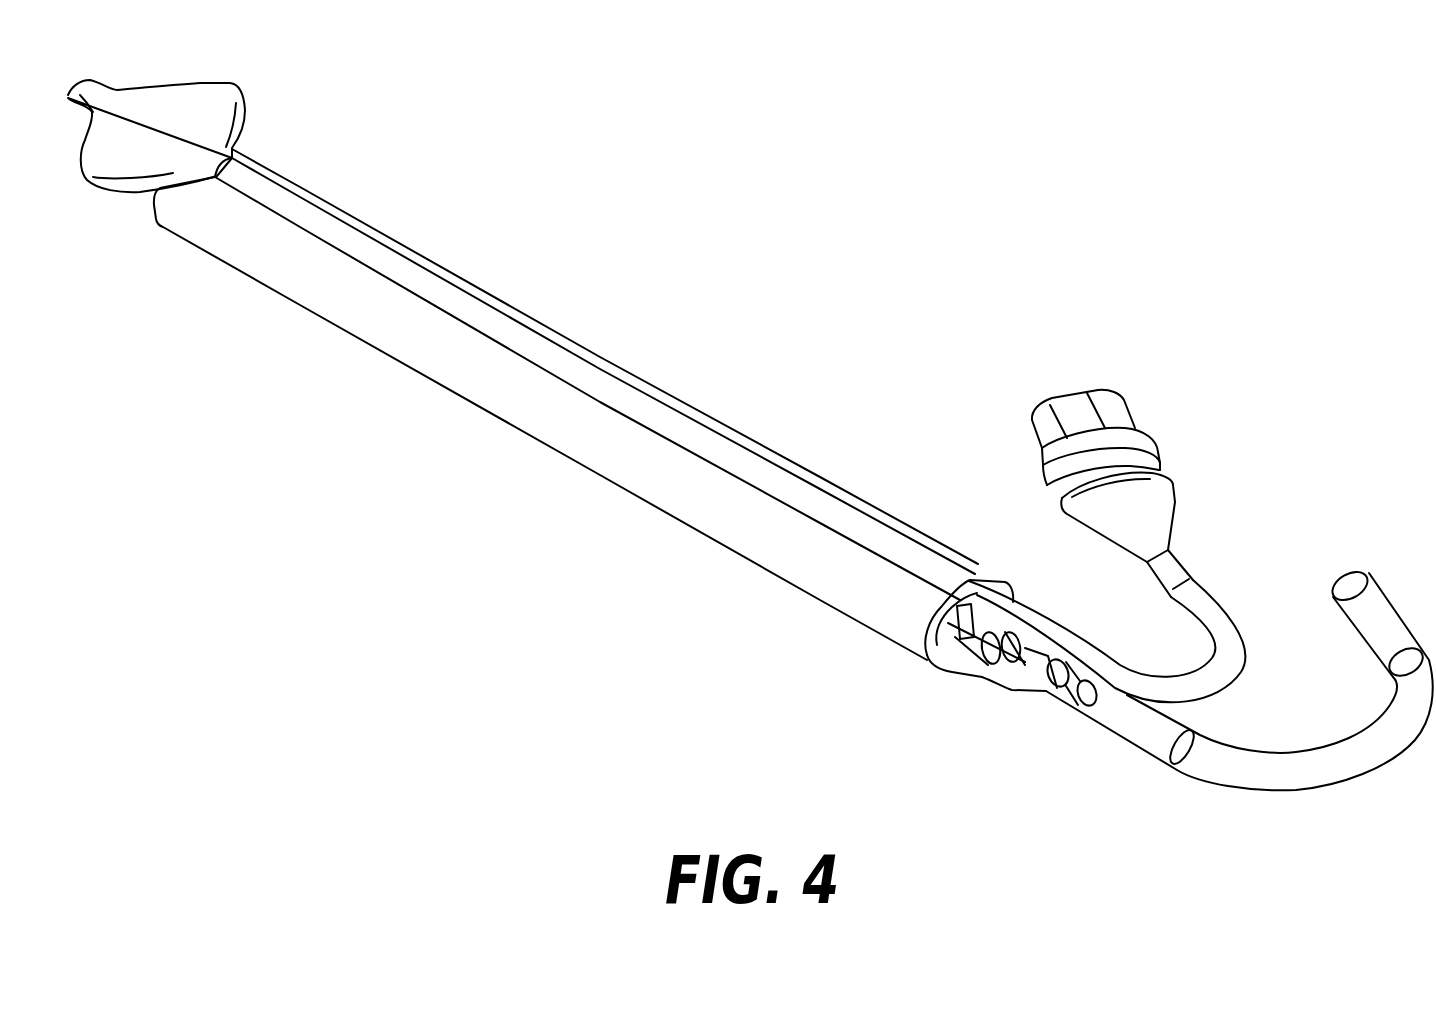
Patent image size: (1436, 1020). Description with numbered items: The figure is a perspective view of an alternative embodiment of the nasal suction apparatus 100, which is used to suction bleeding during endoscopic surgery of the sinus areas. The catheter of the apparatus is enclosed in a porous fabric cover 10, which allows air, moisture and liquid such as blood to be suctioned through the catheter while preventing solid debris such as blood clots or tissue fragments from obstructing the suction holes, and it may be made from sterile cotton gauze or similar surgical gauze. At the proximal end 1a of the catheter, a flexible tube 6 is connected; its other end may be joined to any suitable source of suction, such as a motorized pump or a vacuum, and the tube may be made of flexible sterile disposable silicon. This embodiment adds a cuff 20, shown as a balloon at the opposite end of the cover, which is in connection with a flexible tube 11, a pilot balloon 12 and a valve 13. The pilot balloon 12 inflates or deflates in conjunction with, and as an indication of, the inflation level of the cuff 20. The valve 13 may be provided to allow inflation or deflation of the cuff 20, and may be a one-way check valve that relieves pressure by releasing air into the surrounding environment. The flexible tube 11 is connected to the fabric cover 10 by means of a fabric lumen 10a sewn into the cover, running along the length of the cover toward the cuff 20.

The nasal suction apparatus 100 is at (468, 523).
The cuff 20 is at (262, 123).
The porous fabric cover 10 is at (274, 356).
The fabric lumen 10a is at (388, 266).
The proximal end 1a is at (970, 694).
The flexible tube 11 is at (1139, 648).
The pilot balloon 12 is at (1186, 514).
The valve 13 is at (1126, 397).
The flexible tube 6 is at (1125, 748).